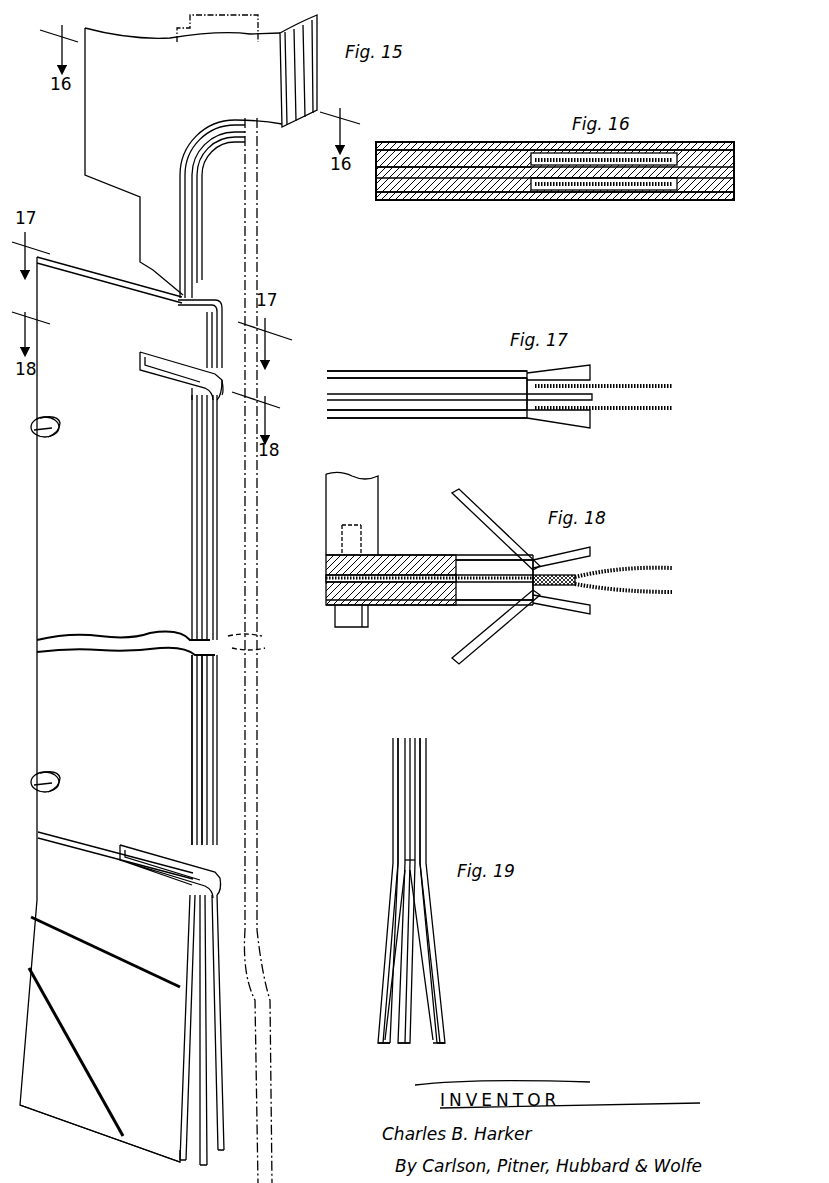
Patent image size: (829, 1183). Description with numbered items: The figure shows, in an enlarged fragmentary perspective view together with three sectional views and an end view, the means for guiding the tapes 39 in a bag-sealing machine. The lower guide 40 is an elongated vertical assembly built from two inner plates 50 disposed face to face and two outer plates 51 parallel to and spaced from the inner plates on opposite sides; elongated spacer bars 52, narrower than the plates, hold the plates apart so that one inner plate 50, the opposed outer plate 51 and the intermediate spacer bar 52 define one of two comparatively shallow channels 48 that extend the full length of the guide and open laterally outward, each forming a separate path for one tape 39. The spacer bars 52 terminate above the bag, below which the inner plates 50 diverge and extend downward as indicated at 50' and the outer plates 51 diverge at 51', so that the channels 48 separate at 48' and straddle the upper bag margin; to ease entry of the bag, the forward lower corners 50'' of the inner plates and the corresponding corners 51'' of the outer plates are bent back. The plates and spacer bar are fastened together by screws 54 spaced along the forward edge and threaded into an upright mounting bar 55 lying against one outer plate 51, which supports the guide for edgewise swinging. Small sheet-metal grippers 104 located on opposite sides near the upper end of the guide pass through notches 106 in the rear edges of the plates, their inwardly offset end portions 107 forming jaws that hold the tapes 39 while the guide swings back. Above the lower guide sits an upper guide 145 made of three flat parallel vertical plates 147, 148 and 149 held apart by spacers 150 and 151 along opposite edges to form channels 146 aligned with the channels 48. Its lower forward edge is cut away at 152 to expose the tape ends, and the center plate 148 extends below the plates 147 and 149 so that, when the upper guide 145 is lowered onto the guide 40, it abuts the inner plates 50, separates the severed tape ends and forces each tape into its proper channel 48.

In FIG. 15, the tapes 39 is at (266, 643).
In FIG. 16, the tapes 39 is at (558, 160).
In FIG. 17, the tapes 39 is at (674, 402).
In FIG. 18, the tapes 39 is at (676, 580).
In FIG. 15, the guide 40 is at (42, 642).
In FIG. 17, the guide 40 is at (362, 370).
In FIG. 18, the guide 40 is at (400, 615).
In FIG. 19, the guide 40 is at (428, 784).
In FIG. 15, the channels 48 is at (211, 572).
In FIG. 17, the channels 48 is at (578, 399).
In FIG. 15, the channel separation point 48' is at (221, 1030).
In FIG. 15, the inner plates 50 is at (223, 750).
In FIG. 17, the inner plates 50 is at (459, 374).
In FIG. 18, the inner plates 50 is at (429, 557).
In FIG. 19, the inner plates 50 is at (432, 890).
In FIG. 19, the diverged lower end portions of inner plates 50' is at (422, 1058).
In FIG. 19, the forward corners of inner plates 50'' is at (422, 1054).
In FIG. 15, the outer plates 51 is at (218, 750).
In FIG. 17, the outer plates 51 is at (427, 398).
In FIG. 18, the outer plates 51 is at (391, 577).
In FIG. 19, the outer plates 51 is at (423, 890).
In FIG. 15, the diverged lower end portions of outer plates 51' is at (220, 1116).
In FIG. 19, the diverged lower end portions of outer plates 51' is at (420, 956).
In FIG. 15, the forward corners of outer plates 51'' is at (100, 1133).
In FIG. 17, the spacer bars 52 is at (498, 410).
In FIG. 18, the spacer bars 52 is at (328, 578).
In FIG. 19, the spacer bars 52 is at (402, 818).
In FIG. 15, the screws 54 is at (60, 430).
In FIG. 18, the screws 54 is at (348, 628).
In FIG. 18, the mounting bar 55 is at (370, 507).
In FIG. 18, the grippers 104 is at (496, 520).
In FIG. 15, the notches 106 is at (140, 368).
In FIG. 18, the notches 106 is at (462, 595).
In FIG. 18, the gripper end portion 107 is at (556, 566).
In FIG. 15, the upper guide 145 is at (84, 146).
In FIG. 16, the upper guide 145 is at (730, 145).
In FIG. 15, the channels of upper guide 146 is at (190, 252).
In FIG. 16, the channels of upper guide 146 is at (660, 153).
In FIG. 15, the plate of upper guide 147 is at (178, 230).
In FIG. 16, the plate of upper guide 147 is at (626, 200).
In FIG. 15, the center plate of upper guide 148 is at (195, 212).
In FIG. 16, the center plate of upper guide 148 is at (648, 182).
In FIG. 15, the plate of upper guide 149 is at (203, 188).
In FIG. 16, the plate of upper guide 149 is at (510, 142).
In FIG. 15, the spacers 150 is at (292, 70).
In FIG. 16, the spacers 150 is at (736, 165).
In FIG. 16, the spacers 151 is at (450, 185).
In FIG. 15, the cut-away portion 152 is at (255, 128).